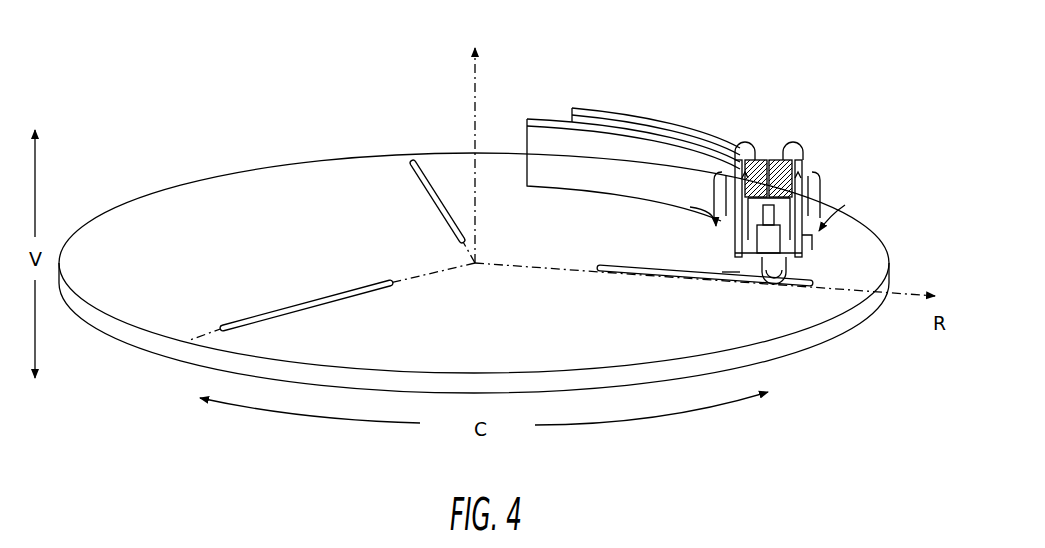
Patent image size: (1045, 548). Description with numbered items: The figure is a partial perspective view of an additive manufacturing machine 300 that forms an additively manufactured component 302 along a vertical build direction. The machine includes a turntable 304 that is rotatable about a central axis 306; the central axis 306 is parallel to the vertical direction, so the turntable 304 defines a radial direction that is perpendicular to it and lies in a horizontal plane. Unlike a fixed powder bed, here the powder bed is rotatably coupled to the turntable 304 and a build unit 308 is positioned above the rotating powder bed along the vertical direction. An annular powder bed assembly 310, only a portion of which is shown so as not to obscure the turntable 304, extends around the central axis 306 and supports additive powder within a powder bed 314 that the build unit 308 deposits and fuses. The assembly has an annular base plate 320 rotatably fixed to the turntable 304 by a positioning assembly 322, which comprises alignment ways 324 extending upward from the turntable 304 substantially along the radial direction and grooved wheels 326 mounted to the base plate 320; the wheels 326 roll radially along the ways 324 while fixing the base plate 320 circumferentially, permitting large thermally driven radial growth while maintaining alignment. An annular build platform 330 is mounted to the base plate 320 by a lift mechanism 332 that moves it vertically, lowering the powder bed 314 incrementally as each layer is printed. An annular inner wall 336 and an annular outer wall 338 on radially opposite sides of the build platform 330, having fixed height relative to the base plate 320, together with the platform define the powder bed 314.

The additive manufacturing machine 300 is at (840, 61).
The additively manufactured component 302 is at (769, 165).
The turntable 304 is at (165, 205).
The central axis 306 is at (480, 66).
The build unit 308 is at (737, 96).
The annular powder bed assembly 310 is at (874, 180).
The powder bed 314 is at (733, 168).
The annular base plate 320 is at (762, 250).
The positioning assembly 322 is at (797, 272).
The alignment ways 324 is at (430, 177).
The grooved wheels 326 is at (788, 283).
The annular build platform 330 is at (717, 229).
The lift mechanism 332 is at (812, 240).
The annular inner wall 336 is at (727, 191).
The annular outer wall 338 is at (812, 177).